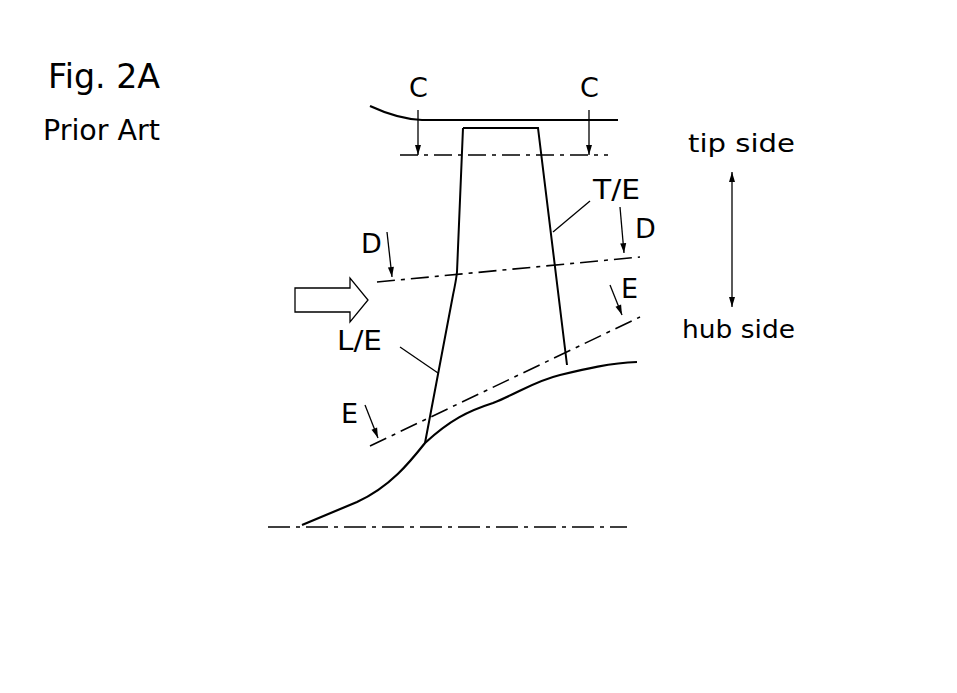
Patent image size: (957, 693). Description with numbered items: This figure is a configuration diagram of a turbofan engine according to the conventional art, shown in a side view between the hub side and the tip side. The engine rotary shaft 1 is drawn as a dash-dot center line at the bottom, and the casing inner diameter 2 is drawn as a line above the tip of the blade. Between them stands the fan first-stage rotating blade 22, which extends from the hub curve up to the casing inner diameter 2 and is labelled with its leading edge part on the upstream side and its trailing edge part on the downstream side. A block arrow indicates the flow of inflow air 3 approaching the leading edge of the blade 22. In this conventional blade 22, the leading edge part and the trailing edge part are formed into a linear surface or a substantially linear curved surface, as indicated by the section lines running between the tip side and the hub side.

The engine rotary shaft 1 is at (595, 527).
The casing inner diameter 2 is at (393, 117).
The flow of inflow air 3 is at (312, 305).
The fan first-stage rotating blade 22 is at (497, 180).